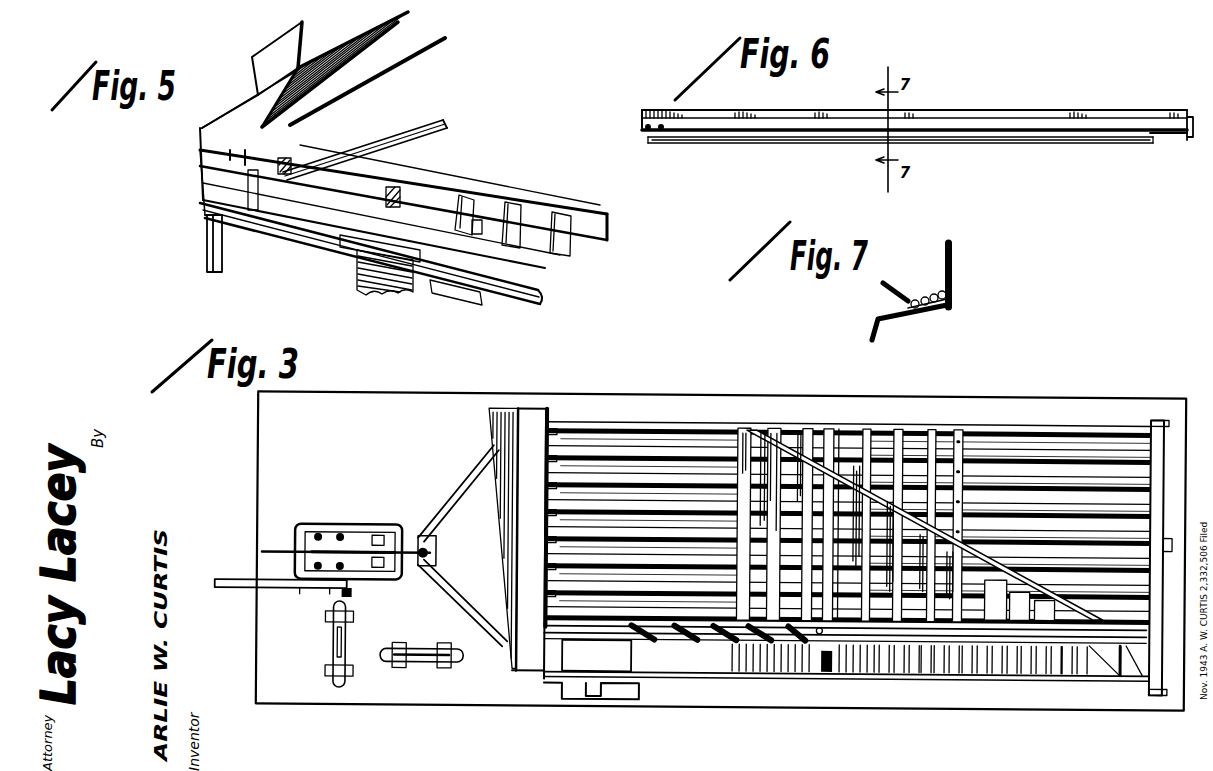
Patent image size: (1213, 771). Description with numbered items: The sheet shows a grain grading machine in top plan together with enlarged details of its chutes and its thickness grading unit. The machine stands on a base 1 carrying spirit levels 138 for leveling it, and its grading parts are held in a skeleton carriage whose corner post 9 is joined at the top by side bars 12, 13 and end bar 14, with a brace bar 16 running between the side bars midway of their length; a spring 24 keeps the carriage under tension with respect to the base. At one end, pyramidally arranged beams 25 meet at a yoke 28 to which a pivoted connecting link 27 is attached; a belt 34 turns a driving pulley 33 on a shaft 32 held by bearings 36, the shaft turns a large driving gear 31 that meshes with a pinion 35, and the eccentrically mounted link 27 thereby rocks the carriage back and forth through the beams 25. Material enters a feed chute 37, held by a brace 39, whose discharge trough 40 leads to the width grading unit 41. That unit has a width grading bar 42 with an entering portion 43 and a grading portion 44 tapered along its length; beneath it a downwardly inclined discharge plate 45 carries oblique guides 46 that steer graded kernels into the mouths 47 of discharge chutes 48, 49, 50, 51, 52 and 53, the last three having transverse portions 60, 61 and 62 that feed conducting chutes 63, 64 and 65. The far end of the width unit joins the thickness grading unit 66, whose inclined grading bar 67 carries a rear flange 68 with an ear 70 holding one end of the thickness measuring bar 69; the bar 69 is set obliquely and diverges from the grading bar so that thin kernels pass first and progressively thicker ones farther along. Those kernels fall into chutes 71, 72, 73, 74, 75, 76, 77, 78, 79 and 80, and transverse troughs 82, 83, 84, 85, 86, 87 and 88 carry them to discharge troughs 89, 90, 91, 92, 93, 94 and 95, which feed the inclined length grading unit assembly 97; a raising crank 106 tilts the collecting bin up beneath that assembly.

In FIG. 3, the base 1 is at (428, 692).
In FIG. 5, the corner post 9 is at (218, 248).
In FIG. 3, the side bar 12 is at (990, 430).
In FIG. 5, the side bar 13 is at (275, 230).
In FIG. 3, the side bar 13 is at (826, 657).
In FIG. 5, the end bar 14 is at (417, 127).
In FIG. 3, the brace bar 16 is at (915, 428).
In FIG. 3, the spring 24 is at (1172, 536).
In FIG. 3, the pyramidally arranged beams 25 is at (470, 468).
In FIG. 3, the pivoted connecting link 27 is at (412, 535).
In FIG. 3, the yoke 28 is at (425, 538).
In FIG. 3, the driving gear 31 is at (380, 548).
In FIG. 3, the shaft 32 is at (343, 598).
In FIG. 3, the driving pulley 33 is at (300, 595).
In FIG. 3, the belt 34 is at (275, 592).
In FIG. 3, the pinion 35 is at (392, 576).
In FIG. 3, the bearings 36 is at (338, 568).
In FIG. 5, the feed chute 37 is at (403, 50).
In FIG. 3, the feed chute 37 is at (532, 420).
In FIG. 5, the brace 39 is at (252, 193).
In FIG. 5, the discharge trough 40 is at (205, 173).
In FIG. 3, the discharge trough 40 is at (528, 668).
In FIG. 5, the width grading unit 41 is at (428, 167).
In FIG. 3, the width grading unit 41 is at (633, 661).
In FIG. 5, the width grading bar 42 is at (442, 195).
In FIG. 5, the entering portion 43 is at (340, 157).
In FIG. 5, the grading portion 44 is at (513, 207).
In FIG. 5, the discharge plate 45 is at (525, 197).
In FIG. 3, the discharge plate 45 is at (680, 661).
In FIG. 5, the guides 46 is at (563, 227).
In FIG. 3, the guides 46 is at (833, 665).
In FIG. 5, the mouths 47 is at (368, 207).
In FIG. 5, the discharge chute 48 is at (380, 233).
In FIG. 3, the discharge chute 48 is at (647, 657).
In FIG. 5, the discharge chute 49 is at (400, 283).
In FIG. 5, the discharge chute 50 is at (458, 295).
In FIG. 3, the discharge chute 50 is at (706, 661).
In FIG. 5, the discharge chute 51 is at (537, 300).
In FIG. 3, the discharge chute 51 is at (740, 661).
In FIG. 3, the discharge chute 52 is at (765, 661).
In FIG. 3, the discharge chute 53 is at (800, 661).
In FIG. 3, the downwardly and transversely disposed portion 60 is at (765, 430).
In FIG. 3, the downwardly and transversely disposed portion 61 is at (820, 425).
In FIG. 3, the downwardly and transversely disposed portion 62 is at (865, 430).
In FIG. 3, the conducting chute 63 is at (623, 432).
In FIG. 3, the conducting chute 64 is at (648, 455).
In FIG. 3, the conducting chute 65 is at (678, 473).
In FIG. 6, the thickness grading unit 66 is at (1089, 140).
In FIG. 7, the thickness grading unit 66 is at (966, 284).
In FIG. 3, the thickness grading unit 66 is at (923, 627).
In FIG. 6, the grading bar 67 is at (1047, 142).
In FIG. 7, the grading bar 67 is at (903, 316).
In FIG. 6, the flange 68 is at (1178, 134).
In FIG. 7, the flange 68 is at (955, 300).
In FIG. 6, the thickness measuring bar 69 is at (1072, 123).
In FIG. 7, the thickness measuring bar 69 is at (893, 283).
In FIG. 6, the ear 70 is at (1191, 116).
In FIG. 3, the chute 71 is at (880, 661).
In FIG. 3, the chute 72 is at (893, 663).
In FIG. 3, the chute 73 is at (922, 667).
In FIG. 3, the chute 74 is at (958, 667).
In FIG. 3, the chute 75 is at (987, 667).
In FIG. 3, the chute 76 is at (1015, 667).
In FIG. 3, the chute 77 is at (1043, 667).
In FIG. 3, the chute 78 is at (1077, 667).
In FIG. 3, the chute 79 is at (1100, 667).
In FIG. 3, the chute 80 is at (1128, 667).
In FIG. 3, the trough 82 is at (880, 497).
In FIG. 3, the trough 83 is at (913, 497).
In FIG. 3, the trough 84 is at (963, 513).
In FIG. 3, the trough 85 is at (1000, 513).
In FIG. 3, the trough 86 is at (1003, 547).
In FIG. 3, the trough 87 is at (1023, 567).
In FIG. 3, the trough 88 is at (1050, 593).
In FIG. 3, the discharge trough 89 is at (546, 488).
In FIG. 3, the discharge trough 90 is at (546, 509).
In FIG. 3, the discharge trough 91 is at (546, 528).
In FIG. 3, the discharge trough 92 is at (546, 551).
In FIG. 3, the discharge trough 93 is at (546, 574).
In FIG. 3, the discharge trough 94 is at (546, 599).
In FIG. 3, the discharge trough 95 is at (546, 619).
In FIG. 3, the length grading unit assembly 97 is at (1035, 445).
In FIG. 3, the raising crank 106 is at (608, 700).
In FIG. 3, the spirit levels 138 is at (420, 647).